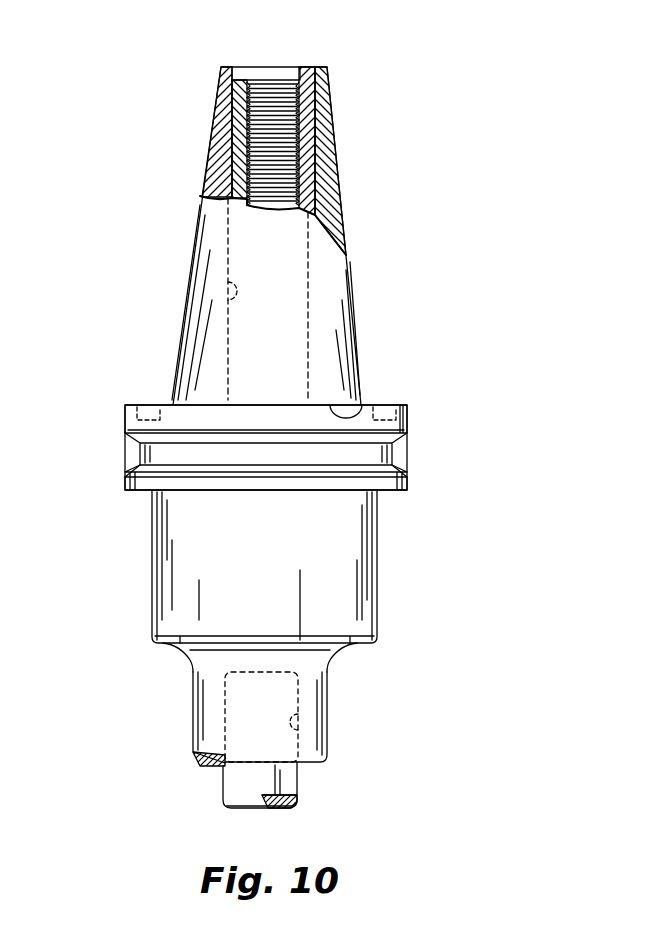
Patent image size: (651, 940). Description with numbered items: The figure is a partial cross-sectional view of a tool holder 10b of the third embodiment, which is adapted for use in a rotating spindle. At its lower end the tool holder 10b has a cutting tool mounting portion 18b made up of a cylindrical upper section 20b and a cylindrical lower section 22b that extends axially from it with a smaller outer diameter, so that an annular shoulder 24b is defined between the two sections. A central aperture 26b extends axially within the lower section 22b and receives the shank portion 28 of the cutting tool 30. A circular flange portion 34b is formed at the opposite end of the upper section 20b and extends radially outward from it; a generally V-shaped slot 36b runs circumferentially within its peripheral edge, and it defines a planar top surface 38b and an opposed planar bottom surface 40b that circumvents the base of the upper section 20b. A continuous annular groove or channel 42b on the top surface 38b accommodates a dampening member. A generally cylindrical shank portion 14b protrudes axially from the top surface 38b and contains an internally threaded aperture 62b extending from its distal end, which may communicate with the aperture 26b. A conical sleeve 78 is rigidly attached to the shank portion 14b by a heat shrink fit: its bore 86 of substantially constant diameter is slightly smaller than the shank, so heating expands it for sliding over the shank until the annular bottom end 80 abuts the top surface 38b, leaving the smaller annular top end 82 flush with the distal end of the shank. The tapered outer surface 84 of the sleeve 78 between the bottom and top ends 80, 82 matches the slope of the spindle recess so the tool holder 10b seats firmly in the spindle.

The tool holder 10b is at (373, 102).
The shank portion 14b is at (318, 163).
The cutting tool mounting portion 18b is at (401, 556).
The upper section 20b is at (157, 554).
The lower section 22b is at (315, 692).
The annular shoulder 24b is at (170, 653).
The central aperture 26b is at (300, 745).
The shank portion of the cutting tool 28 is at (298, 777).
The cutting tool 30 is at (213, 802).
The flange portion 34b is at (428, 440).
The V-shaped slot 36b is at (142, 452).
The top surface 38b is at (402, 407).
The bottom surface 40b is at (385, 492).
The annular groove or channel 42b is at (148, 403).
The internally threaded aperture 62b is at (236, 122).
The conical sleeve 78 is at (371, 276).
The bottom end 80 is at (363, 406).
The top end 82 is at (317, 67).
The tapered outer surface 84 is at (200, 218).
The bore 86 is at (228, 280).